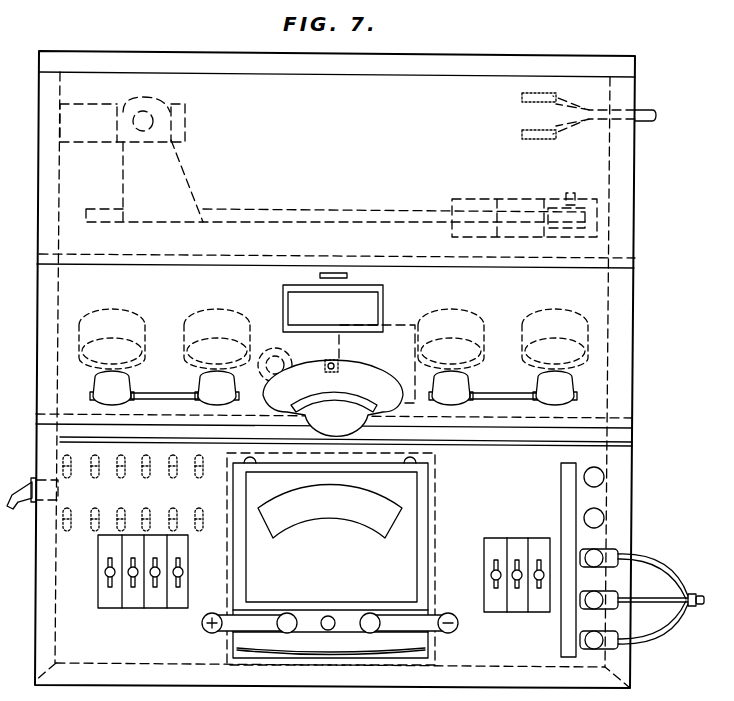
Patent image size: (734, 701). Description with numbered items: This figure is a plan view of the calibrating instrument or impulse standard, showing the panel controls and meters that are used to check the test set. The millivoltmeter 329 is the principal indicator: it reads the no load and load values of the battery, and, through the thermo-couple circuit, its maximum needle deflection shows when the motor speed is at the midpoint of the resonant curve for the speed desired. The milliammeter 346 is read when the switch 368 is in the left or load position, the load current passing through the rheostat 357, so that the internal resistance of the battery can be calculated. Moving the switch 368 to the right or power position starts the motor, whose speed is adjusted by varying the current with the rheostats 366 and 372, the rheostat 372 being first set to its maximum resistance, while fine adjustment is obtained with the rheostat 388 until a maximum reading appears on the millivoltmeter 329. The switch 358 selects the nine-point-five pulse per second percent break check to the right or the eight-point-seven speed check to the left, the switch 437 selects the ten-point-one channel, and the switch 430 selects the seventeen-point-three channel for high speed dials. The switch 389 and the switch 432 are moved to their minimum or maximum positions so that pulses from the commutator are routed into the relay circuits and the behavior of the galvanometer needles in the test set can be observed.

The millivoltmeter 329 is at (330, 559).
The milliammeter 346 is at (347, 368).
The rheostat 357 is at (567, 320).
The switch 358 is at (106, 569).
The rheostat 366 is at (236, 318).
The switch 368 is at (540, 586).
The rheostat 372 is at (92, 317).
The rheostat 388 is at (431, 318).
The switch 389 is at (492, 571).
The switch 430 is at (151, 585).
The switch 432 is at (514, 580).
The switch 437 is at (130, 578).